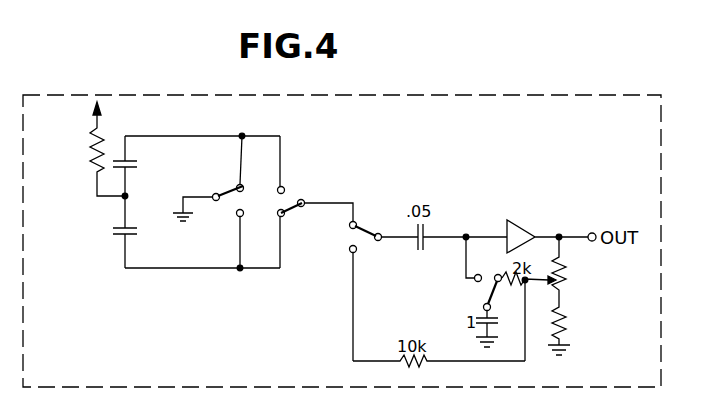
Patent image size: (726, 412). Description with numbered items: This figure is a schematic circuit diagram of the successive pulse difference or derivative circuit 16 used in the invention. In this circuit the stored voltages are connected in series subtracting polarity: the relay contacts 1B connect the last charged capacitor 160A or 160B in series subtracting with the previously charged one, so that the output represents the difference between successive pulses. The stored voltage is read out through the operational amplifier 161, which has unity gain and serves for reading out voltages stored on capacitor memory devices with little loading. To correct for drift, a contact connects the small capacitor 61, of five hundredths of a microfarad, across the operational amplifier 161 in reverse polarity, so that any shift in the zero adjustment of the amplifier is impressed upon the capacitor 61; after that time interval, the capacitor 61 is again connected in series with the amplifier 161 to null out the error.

The successive pulse difference circuit 16 is at (661, 231).
The capacitor 160A is at (151, 166).
The capacitor 160B is at (151, 232).
The relay contacts 1B is at (279, 204).
The capacitor 61 is at (426, 232).
The operational amplifier 161 is at (521, 226).